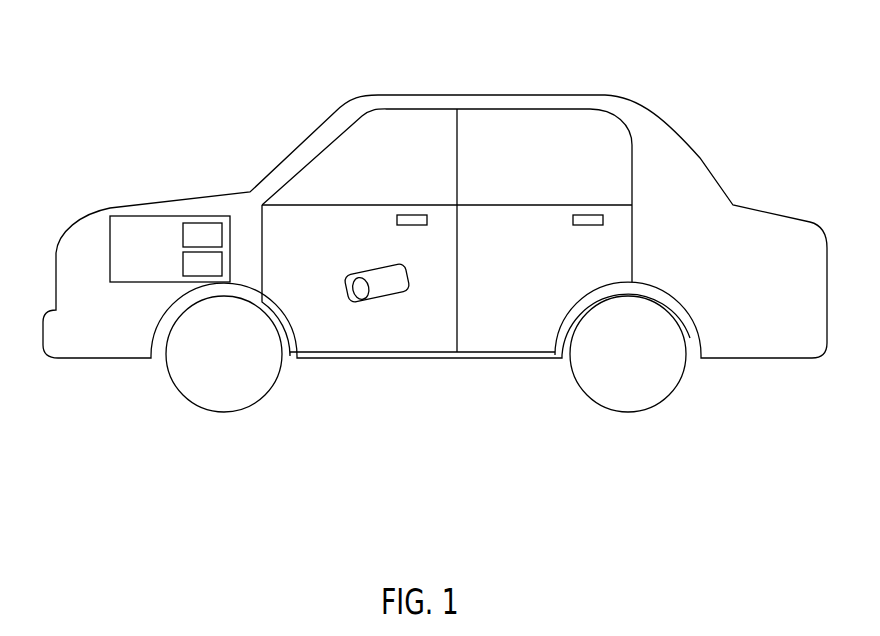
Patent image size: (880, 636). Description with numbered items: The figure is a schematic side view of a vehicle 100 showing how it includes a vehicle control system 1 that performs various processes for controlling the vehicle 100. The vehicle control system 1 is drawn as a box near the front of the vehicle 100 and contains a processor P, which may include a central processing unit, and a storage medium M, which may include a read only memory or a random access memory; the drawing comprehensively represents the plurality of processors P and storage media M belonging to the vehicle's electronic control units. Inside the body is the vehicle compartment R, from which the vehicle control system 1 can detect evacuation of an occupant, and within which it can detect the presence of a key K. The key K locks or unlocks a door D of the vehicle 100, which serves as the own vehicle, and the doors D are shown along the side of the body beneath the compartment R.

The vehicle 100 is at (687, 87).
The vehicle compartment R is at (489, 167).
The door D is at (335, 347).
The key K is at (366, 266).
The vehicle control system 1 is at (170, 249).
The processor P is at (202, 235).
The storage medium M is at (202, 264).